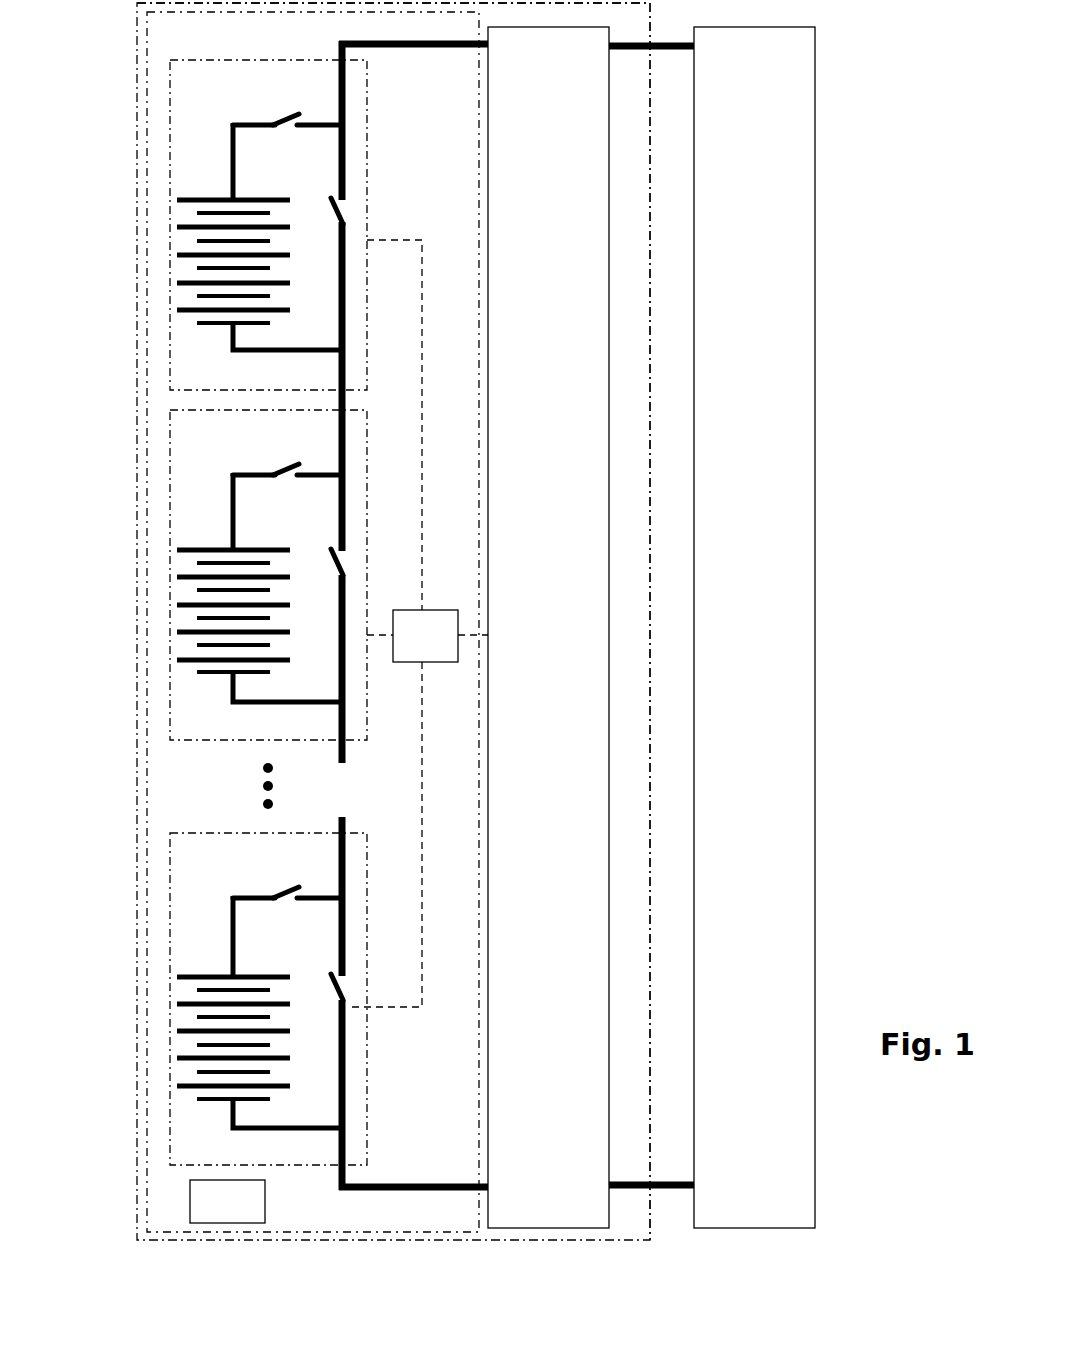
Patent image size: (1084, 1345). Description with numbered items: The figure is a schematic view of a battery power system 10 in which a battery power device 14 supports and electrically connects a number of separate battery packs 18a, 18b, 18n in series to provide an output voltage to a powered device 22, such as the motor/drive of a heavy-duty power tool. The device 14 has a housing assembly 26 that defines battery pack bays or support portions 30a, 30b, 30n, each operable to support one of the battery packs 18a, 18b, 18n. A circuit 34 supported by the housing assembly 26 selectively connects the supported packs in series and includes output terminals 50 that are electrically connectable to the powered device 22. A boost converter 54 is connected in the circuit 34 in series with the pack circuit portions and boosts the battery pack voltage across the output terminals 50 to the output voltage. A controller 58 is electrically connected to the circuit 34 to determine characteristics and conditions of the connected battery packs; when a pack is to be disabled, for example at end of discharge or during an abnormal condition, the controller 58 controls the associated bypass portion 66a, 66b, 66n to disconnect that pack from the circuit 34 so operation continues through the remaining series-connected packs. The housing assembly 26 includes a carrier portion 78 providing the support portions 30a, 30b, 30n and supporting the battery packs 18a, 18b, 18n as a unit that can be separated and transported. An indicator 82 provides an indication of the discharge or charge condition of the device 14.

The battery power system 10 is at (133, 52).
The battery power device 14 is at (128, 1216).
The battery pack 18a is at (214, 225).
The battery pack 18b is at (213, 575).
The battery pack 18n is at (213, 999).
The powered device 22 is at (815, 618).
The housing assembly 26 is at (652, 225).
The support portion 30a is at (193, 127).
The support portion 30b is at (198, 500).
The support portion 30n is at (195, 920).
The circuit 34 is at (430, 45).
The output terminals 50 is at (670, 50).
The boost converter 54 is at (552, 766).
The controller 58 is at (418, 623).
The bypass portion 66a is at (355, 157).
The bypass portion 66b is at (360, 495).
The bypass portion 66n is at (352, 1008).
The carrier portion 78 is at (147, 1113).
The indicator 82 is at (227, 1201).